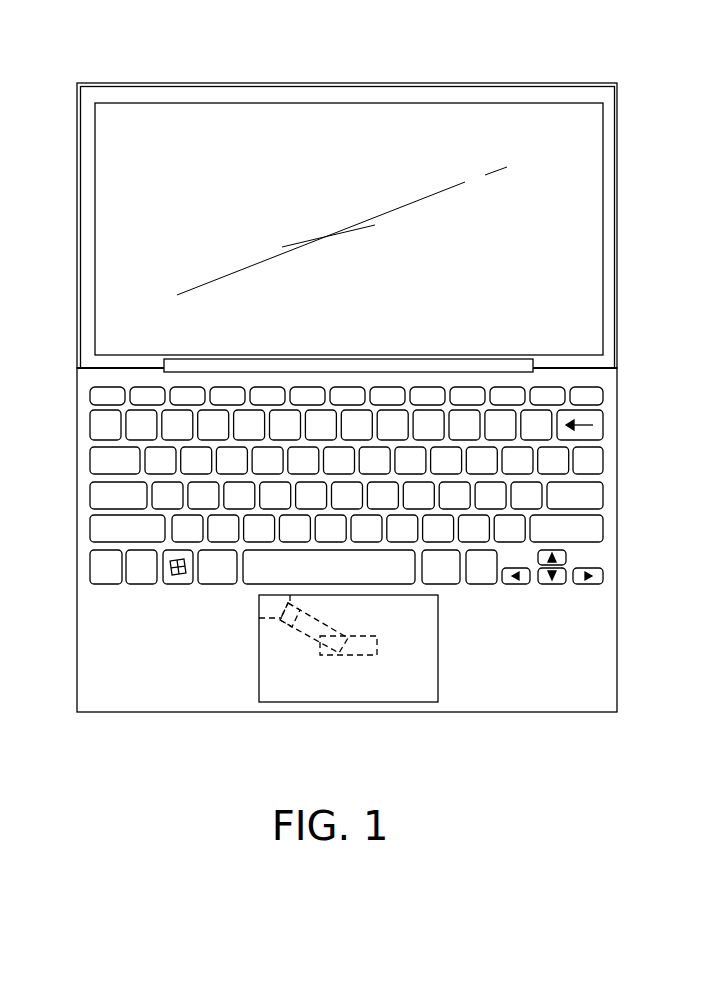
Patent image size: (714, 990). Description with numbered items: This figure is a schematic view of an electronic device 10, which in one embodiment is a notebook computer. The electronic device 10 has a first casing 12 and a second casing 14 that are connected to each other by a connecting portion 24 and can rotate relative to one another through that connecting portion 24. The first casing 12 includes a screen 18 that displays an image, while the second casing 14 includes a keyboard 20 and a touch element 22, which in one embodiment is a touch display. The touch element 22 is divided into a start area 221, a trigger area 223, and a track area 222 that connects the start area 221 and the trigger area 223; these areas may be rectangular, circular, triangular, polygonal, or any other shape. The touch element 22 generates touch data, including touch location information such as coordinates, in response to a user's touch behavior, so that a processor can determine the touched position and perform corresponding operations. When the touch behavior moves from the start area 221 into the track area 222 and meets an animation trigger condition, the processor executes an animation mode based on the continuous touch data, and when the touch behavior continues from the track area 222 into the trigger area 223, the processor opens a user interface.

The electronic device 10 is at (44, 55).
The first casing 12 is at (612, 284).
The screen 18 is at (582, 330).
The connecting portion 24 is at (530, 370).
The second casing 14 is at (608, 556).
The keyboard 20 is at (590, 454).
The touch element 22 is at (398, 692).
The start area 221 is at (264, 610).
The track area 222 is at (308, 628).
The trigger area 223 is at (362, 646).